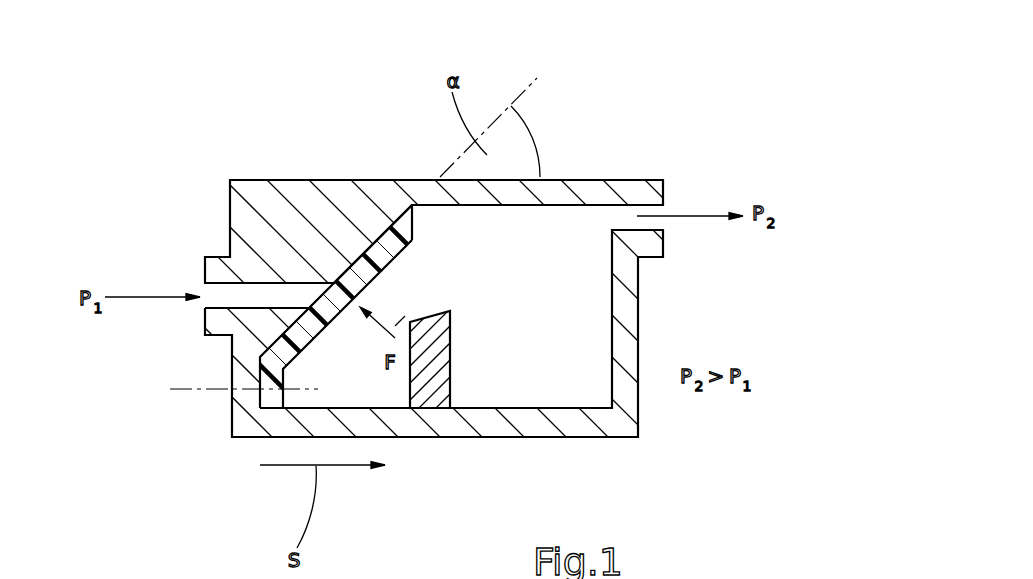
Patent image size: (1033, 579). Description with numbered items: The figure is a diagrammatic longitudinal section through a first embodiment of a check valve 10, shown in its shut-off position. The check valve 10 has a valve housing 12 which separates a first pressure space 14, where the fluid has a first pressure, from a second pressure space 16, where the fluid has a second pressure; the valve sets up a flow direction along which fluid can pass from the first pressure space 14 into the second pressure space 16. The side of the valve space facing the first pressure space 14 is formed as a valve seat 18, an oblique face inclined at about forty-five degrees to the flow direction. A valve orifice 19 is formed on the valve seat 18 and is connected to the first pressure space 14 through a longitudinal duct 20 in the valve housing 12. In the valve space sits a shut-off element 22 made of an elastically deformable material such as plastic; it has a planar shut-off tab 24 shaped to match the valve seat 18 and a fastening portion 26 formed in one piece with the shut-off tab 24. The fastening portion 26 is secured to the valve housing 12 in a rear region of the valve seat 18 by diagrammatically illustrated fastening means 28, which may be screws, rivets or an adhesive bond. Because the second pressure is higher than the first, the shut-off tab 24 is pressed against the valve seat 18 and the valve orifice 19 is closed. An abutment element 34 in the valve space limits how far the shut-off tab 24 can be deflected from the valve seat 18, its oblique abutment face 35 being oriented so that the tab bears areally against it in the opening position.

The check valve 10 is at (516, 289).
The valve housing 12 is at (288, 213).
The first pressure space 14 is at (229, 257).
The second pressure space 16 is at (655, 177).
The valve seat 18 is at (411, 205).
The valve orifice 19 is at (337, 282).
The longitudinal duct 20 is at (248, 292).
The shut-off element 22 is at (338, 340).
The shut-off tab 24 is at (362, 281).
The fastening portion 26 is at (265, 400).
The fastening means 28 is at (205, 388).
The abutment element 34 is at (450, 383).
The abutment face 35 is at (421, 310).